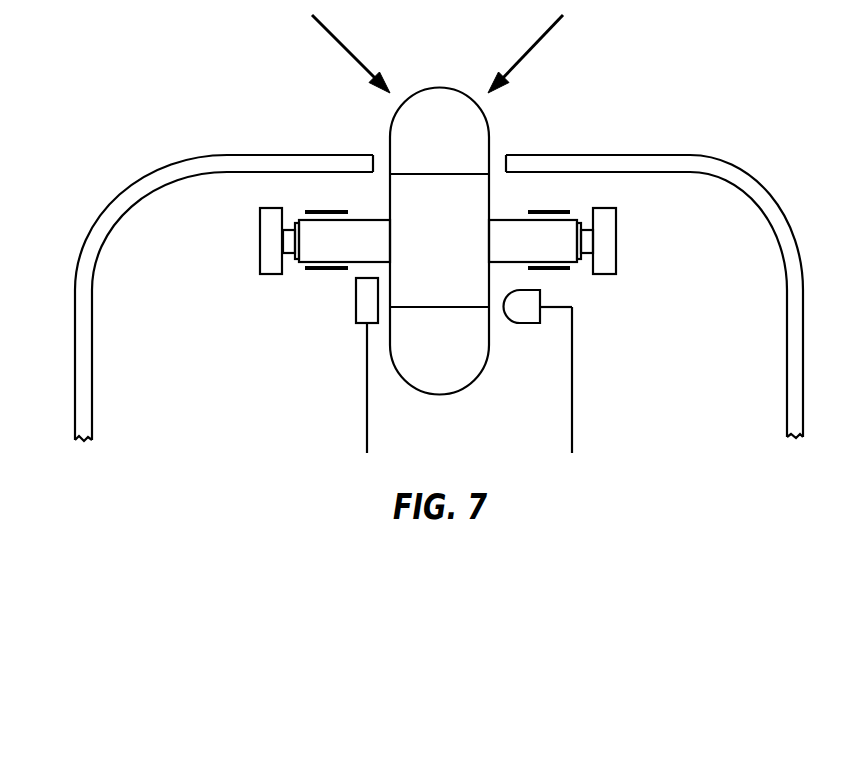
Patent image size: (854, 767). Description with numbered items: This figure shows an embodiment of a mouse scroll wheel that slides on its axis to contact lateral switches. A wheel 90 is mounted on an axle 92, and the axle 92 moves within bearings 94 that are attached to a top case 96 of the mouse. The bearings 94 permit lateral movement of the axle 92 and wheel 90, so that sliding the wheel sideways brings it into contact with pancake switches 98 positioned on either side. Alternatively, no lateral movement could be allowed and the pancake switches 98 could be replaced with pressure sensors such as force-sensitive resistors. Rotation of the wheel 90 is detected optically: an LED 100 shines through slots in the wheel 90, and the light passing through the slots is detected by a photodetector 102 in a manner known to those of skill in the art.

The wheel 90 is at (437, 87).
The axle 92 is at (372, 235).
The bearings 94 is at (327, 273).
The top case 96 is at (608, 155).
The pancake switches 98 is at (258, 238).
The LED 100 is at (521, 323).
The photodetector 102 is at (353, 302).